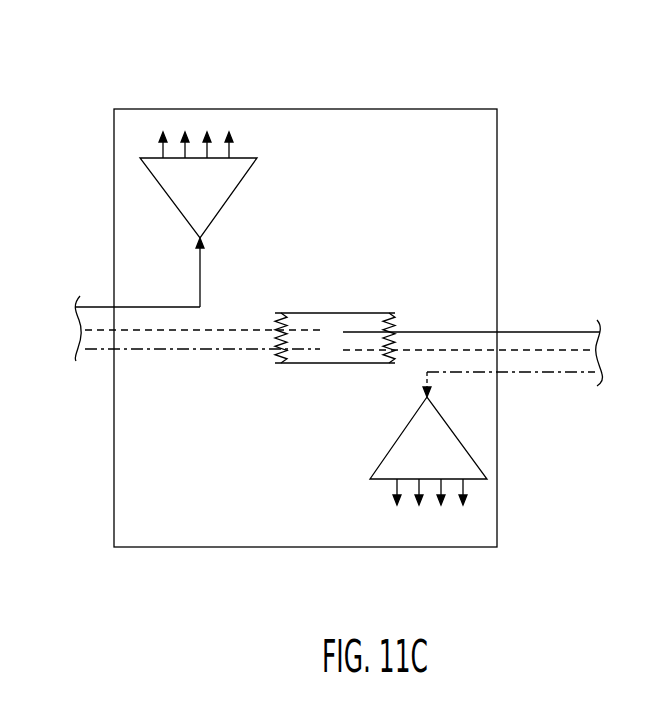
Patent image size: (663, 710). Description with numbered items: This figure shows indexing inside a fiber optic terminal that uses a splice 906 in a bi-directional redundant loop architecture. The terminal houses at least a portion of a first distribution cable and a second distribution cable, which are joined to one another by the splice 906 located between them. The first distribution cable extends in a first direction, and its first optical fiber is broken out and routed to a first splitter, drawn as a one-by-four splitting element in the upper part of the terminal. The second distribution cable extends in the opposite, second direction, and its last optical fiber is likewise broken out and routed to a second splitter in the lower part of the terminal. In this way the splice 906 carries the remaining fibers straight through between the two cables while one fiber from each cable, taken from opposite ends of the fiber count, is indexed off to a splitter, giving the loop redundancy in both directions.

The splice 906 is at (386, 313).